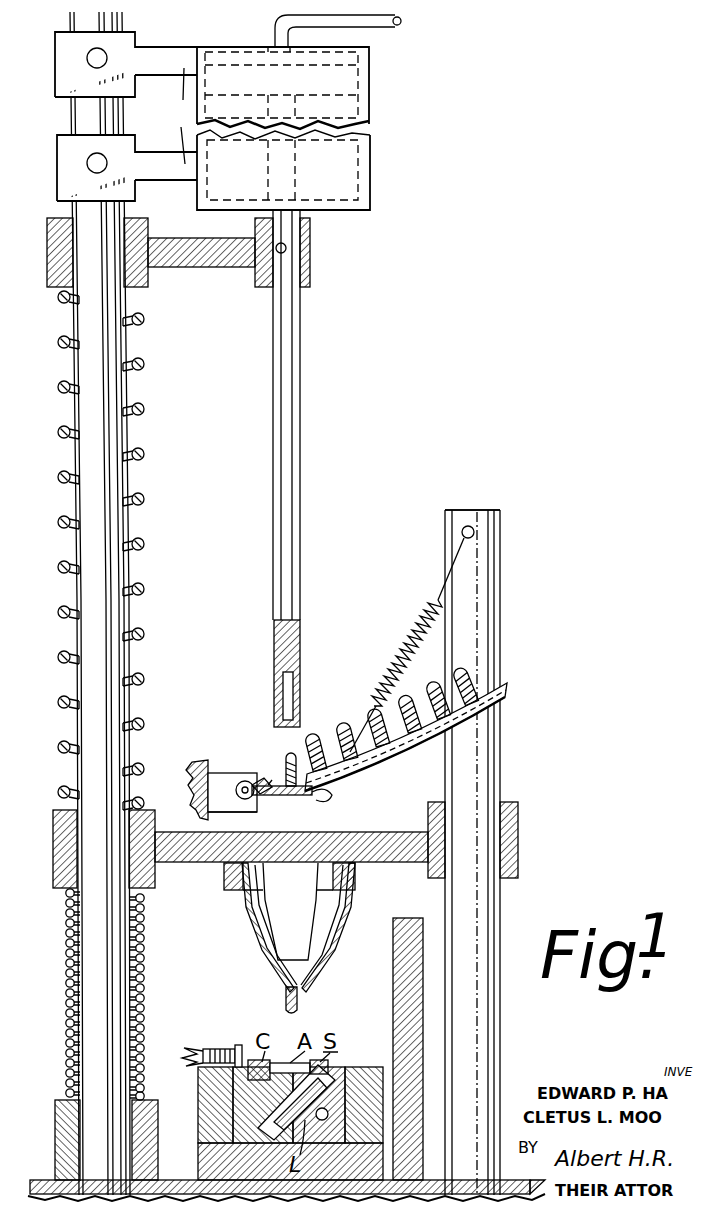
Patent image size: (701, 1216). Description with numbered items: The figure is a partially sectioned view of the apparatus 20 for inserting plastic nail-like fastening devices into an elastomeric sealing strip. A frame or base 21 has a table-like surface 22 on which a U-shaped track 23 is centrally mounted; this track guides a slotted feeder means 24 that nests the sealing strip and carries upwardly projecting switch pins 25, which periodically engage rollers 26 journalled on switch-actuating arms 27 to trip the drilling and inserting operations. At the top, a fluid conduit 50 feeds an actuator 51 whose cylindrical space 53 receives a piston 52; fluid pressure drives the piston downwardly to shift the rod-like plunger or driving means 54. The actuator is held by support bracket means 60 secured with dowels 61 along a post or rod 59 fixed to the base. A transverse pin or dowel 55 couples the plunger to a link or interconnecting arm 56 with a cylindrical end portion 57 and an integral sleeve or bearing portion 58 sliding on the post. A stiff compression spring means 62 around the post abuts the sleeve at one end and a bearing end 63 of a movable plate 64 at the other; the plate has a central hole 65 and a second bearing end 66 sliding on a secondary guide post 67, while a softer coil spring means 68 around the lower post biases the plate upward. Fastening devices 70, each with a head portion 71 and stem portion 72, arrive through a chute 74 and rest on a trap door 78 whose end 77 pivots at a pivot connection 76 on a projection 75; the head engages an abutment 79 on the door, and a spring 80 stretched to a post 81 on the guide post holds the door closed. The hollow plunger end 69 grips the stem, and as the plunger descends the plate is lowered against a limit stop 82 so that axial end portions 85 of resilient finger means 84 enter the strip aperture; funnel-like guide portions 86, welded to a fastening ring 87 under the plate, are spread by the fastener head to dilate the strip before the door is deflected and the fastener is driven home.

The apparatus 20 is at (497, 718).
The frame or base 21 is at (185, 785).
The table-like surface 22 is at (178, 1180).
The U-shaped track 23 is at (200, 1117).
The feeder means 24 is at (340, 1065).
The switch pins 25 is at (240, 1047).
The rollers 26 is at (215, 1052).
The switch-actuating arms 27 is at (192, 1050).
The fluid conduit 50 is at (402, 22).
The actuator 51 is at (370, 152).
The piston 52 is at (350, 80).
The cylindrical space 53 is at (252, 57).
The plunger or driving means 54 is at (300, 357).
The transverse pin or dowel 55 is at (287, 248).
The link or interconnecting arm 56 is at (238, 270).
The cylindrical end portion 57 is at (311, 273).
The sleeve or bearing portion 58 is at (55, 250).
The post or rod 59 is at (73, 109).
The support bracket means 60 is at (177, 116).
The dowels 61 is at (87, 58).
The compression spring means 62 is at (60, 366).
The bearing end 63 is at (60, 855).
The movable plate 64 is at (400, 842).
The hole 65 is at (278, 852).
The bearing end 66 is at (519, 813).
The secondary guide post 67 is at (482, 752).
The coil spring means 68 is at (62, 941).
The plunger end 69 is at (300, 660).
The fastening device 70 is at (343, 745).
The head portion 71 is at (290, 797).
The stem portion 72 is at (296, 754).
The chute 74 is at (506, 684).
The projection 75 is at (215, 775).
The pivot connection 76 is at (246, 781).
The end of trap door 77 is at (232, 828).
The trap door 78 is at (312, 797).
The abutment 79 is at (272, 785).
The spring 80 is at (420, 611).
The post 81 is at (470, 526).
The limit stop 82 is at (408, 918).
The finger means 84 is at (250, 920).
The axial end portions 85 is at (284, 995).
The funnel-like guide portions 86 is at (272, 947).
The fastening ring 87 is at (228, 880).